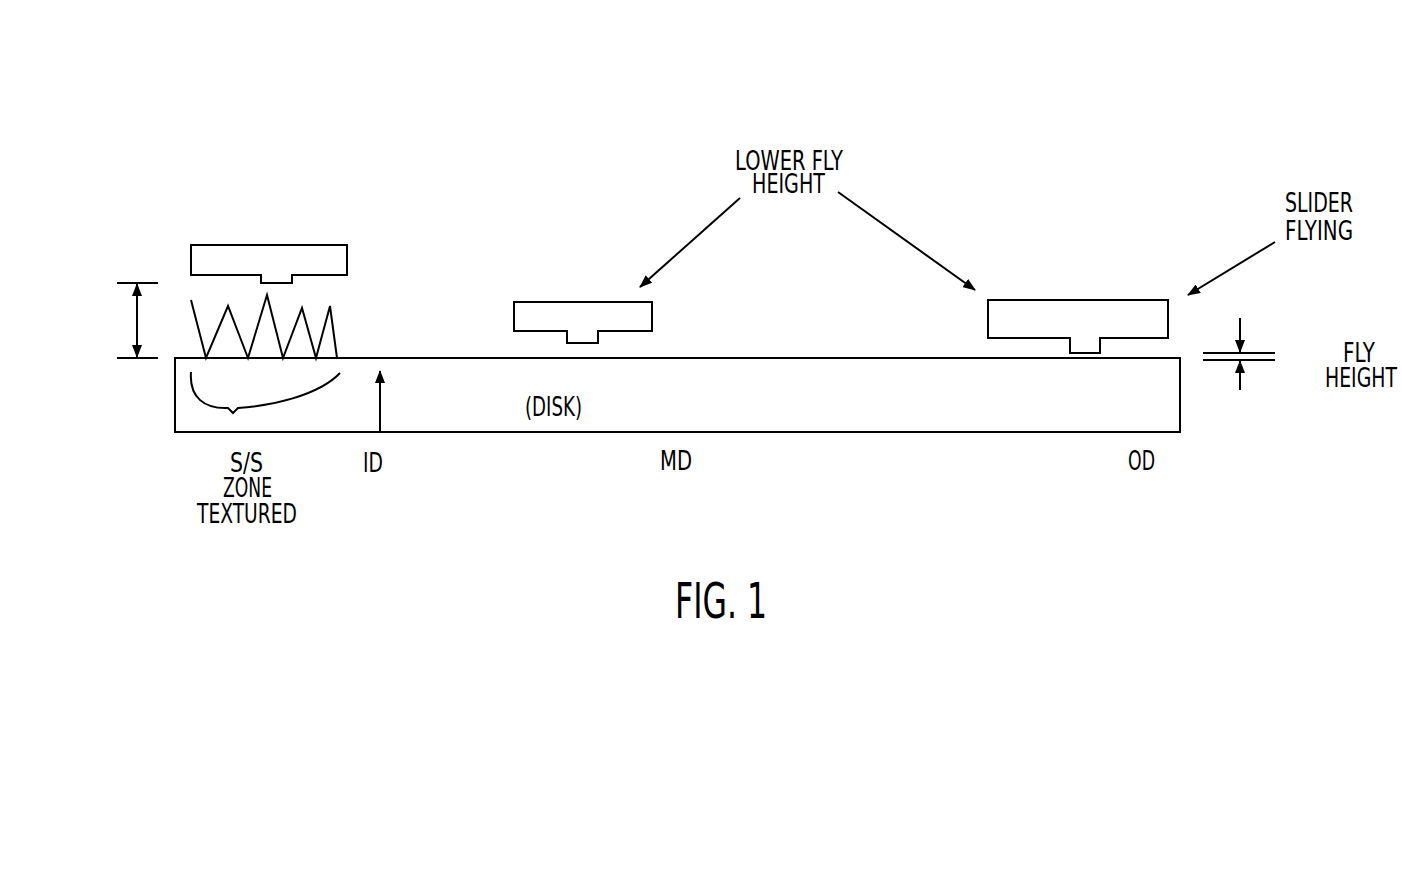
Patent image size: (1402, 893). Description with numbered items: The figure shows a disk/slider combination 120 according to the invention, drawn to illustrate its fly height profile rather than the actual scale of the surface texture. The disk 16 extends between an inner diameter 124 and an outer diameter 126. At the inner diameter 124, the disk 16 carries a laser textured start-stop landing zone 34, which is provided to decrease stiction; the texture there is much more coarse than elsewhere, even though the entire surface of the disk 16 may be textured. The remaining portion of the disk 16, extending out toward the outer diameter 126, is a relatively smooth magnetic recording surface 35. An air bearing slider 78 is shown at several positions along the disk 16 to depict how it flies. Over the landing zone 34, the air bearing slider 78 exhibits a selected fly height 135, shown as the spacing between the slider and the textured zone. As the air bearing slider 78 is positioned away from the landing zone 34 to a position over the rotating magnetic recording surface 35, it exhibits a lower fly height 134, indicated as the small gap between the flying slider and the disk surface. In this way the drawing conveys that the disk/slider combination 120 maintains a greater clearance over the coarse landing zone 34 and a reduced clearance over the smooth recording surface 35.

The disk 16 is at (1018, 467).
The disk/slider combination 120 is at (558, 145).
The air bearing slider 78 is at (323, 255).
The laser textured start-stop landing zone 34 is at (337, 338).
The magnetic recording surface 35 is at (720, 350).
The selected fly height 135 is at (132, 322).
The lower fly height 134 is at (1283, 355).
The inner diameter 124 is at (183, 418).
The outer diameter 126 is at (1167, 420).